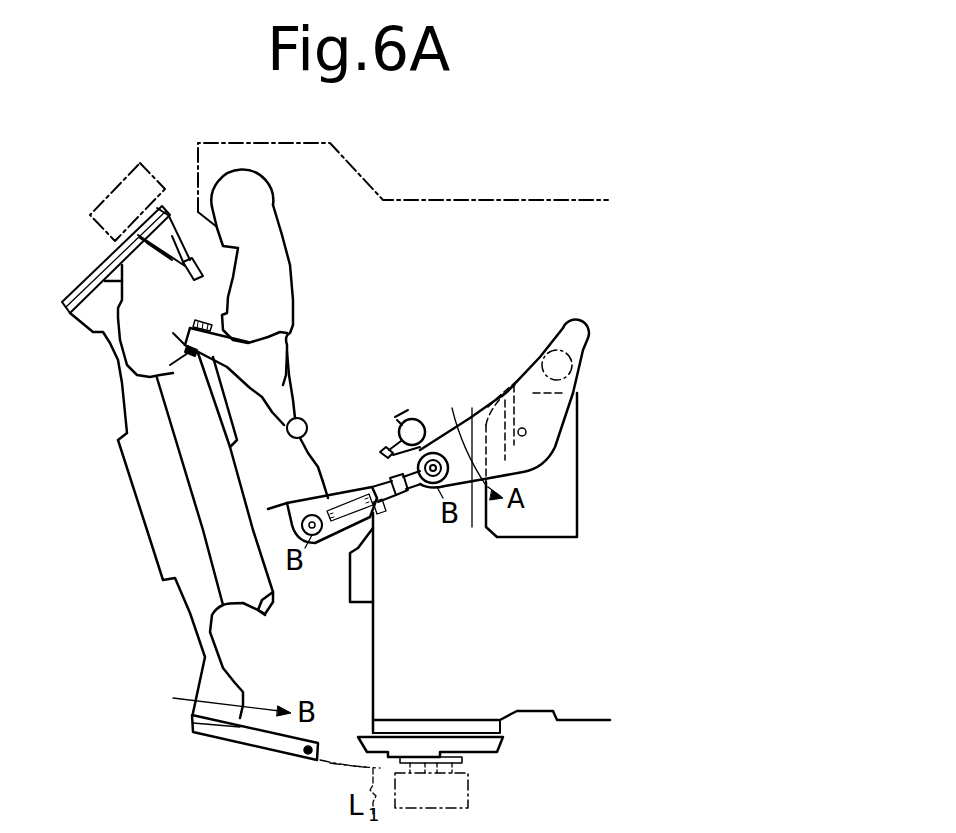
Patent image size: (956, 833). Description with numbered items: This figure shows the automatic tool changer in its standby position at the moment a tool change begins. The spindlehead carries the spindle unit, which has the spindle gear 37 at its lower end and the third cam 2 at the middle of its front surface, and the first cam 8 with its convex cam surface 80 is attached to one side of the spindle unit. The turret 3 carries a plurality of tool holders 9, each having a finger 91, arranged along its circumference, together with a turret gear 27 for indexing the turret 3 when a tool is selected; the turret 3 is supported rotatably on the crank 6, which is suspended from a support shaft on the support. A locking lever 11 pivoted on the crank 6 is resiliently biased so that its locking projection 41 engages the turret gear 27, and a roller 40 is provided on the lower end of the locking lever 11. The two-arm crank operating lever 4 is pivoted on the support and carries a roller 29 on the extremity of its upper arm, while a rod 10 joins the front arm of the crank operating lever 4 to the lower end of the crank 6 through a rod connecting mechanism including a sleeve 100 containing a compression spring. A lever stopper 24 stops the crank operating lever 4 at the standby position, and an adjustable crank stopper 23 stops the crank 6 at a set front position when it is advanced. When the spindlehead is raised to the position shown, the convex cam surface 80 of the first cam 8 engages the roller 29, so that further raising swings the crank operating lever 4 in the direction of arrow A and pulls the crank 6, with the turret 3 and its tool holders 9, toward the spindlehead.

The third cam 2 is at (350, 577).
The turret 3 is at (185, 622).
The crank operating lever 4 is at (585, 340).
The crank 6 is at (290, 288).
The first cam 8 is at (568, 452).
The tool holder 9 is at (255, 740).
The rod 10 is at (398, 500).
The locking lever 11 is at (290, 381).
The crank stopper 23 is at (387, 437).
The lever stopper 24 is at (432, 445).
The turret gear 27 is at (275, 618).
The roller 29 is at (547, 350).
The spindle gear 37 is at (507, 742).
The roller 40 is at (308, 418).
The locking projection 41 is at (190, 348).
The convex cam surface 80 is at (516, 380).
The finger 91 is at (308, 755).
The sleeve 100 is at (345, 487).